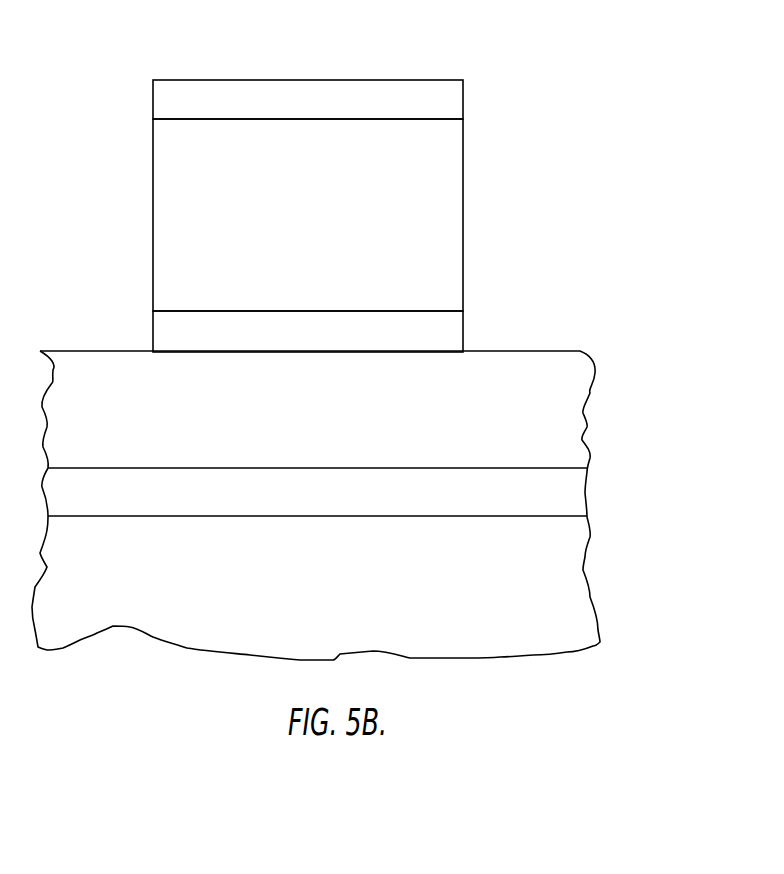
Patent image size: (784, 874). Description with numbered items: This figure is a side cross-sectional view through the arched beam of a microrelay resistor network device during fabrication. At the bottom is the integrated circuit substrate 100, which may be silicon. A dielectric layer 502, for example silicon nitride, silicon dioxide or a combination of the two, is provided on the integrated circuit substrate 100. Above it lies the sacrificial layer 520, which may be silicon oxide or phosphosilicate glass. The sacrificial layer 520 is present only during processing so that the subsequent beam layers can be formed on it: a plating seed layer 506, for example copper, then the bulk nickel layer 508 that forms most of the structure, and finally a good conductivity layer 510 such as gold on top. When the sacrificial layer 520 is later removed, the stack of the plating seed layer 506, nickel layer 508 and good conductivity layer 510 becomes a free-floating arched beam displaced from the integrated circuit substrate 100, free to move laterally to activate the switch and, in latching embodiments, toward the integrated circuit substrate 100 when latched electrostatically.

The good conductivity layer 510 is at (448, 99).
The nickel layer 508 is at (447, 229).
The plating seed layer 506 is at (457, 333).
The sacrificial layer 520 is at (575, 413).
The dielectric layer 502 is at (585, 493).
The integrated circuit substrate 100 is at (575, 553).